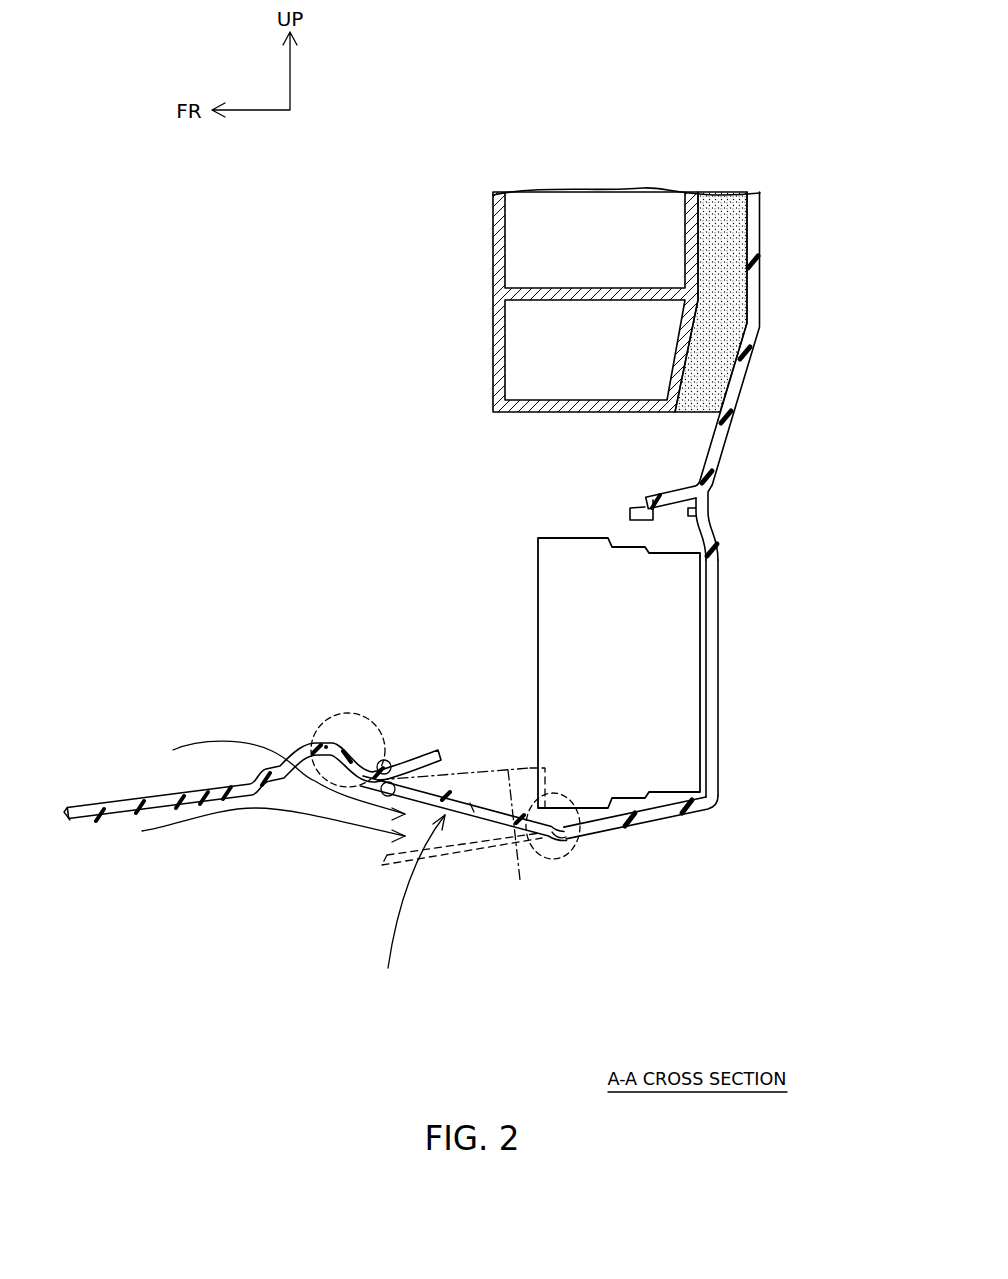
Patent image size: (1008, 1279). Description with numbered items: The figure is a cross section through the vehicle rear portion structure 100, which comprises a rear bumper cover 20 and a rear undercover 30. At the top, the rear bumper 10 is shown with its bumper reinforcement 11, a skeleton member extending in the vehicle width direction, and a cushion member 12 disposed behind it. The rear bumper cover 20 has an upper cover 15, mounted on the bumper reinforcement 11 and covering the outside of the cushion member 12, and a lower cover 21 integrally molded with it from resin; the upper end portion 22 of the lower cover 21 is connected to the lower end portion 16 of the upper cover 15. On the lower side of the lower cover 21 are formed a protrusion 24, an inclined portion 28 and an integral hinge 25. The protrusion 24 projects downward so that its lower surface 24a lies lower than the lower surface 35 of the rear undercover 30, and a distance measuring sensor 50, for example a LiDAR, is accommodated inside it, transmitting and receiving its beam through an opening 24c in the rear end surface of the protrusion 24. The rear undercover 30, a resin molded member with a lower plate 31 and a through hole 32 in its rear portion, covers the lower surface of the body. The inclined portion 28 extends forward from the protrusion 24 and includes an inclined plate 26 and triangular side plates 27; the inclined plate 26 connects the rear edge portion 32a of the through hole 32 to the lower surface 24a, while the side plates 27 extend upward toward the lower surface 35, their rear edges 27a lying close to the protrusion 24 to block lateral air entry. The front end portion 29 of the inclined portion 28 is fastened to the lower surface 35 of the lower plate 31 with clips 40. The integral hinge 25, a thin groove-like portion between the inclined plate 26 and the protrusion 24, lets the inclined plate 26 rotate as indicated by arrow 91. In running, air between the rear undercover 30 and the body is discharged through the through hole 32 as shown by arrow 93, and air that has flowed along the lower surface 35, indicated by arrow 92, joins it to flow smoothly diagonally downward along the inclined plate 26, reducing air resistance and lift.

The vehicle rear portion structure 100 is at (305, 338).
The rear bumper 10 is at (703, 113).
The bumper reinforcement 11 is at (592, 190).
The cushion member 12 is at (720, 195).
The upper cover 15 is at (762, 292).
The lower end portion 16 is at (663, 498).
The rear bumper cover 20 is at (823, 237).
The lower cover 21 is at (720, 543).
The upper end portion 22 is at (690, 512).
The protrusion 24 is at (720, 813).
The lower surface 24a is at (641, 817).
The opening 24c is at (720, 627).
The integral hinge 25 is at (557, 862).
The inclined plate 26 is at (480, 810).
The side plate 27 is at (508, 770).
The rear edge 27a is at (600, 845).
The inclined portion 28 is at (510, 1030).
The front end portion 29 is at (372, 790).
The rear undercover 30 is at (125, 803).
The lower plate 31 is at (70, 825).
The through hole 32 is at (290, 810).
The rear edge portion 32a is at (352, 712).
The lower surface 35 is at (365, 779).
The clip 40 is at (380, 796).
The distance measuring sensor 50 is at (540, 598).
The arrow 91 is at (406, 904).
The arrow 92 is at (143, 832).
The arrow 93 is at (208, 737).